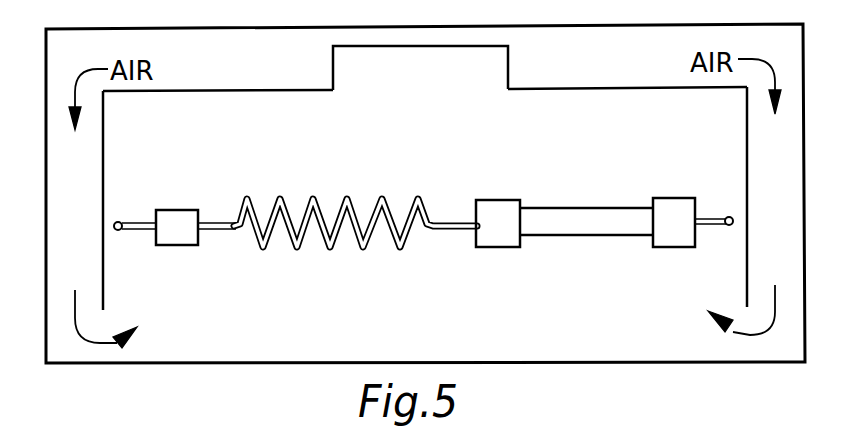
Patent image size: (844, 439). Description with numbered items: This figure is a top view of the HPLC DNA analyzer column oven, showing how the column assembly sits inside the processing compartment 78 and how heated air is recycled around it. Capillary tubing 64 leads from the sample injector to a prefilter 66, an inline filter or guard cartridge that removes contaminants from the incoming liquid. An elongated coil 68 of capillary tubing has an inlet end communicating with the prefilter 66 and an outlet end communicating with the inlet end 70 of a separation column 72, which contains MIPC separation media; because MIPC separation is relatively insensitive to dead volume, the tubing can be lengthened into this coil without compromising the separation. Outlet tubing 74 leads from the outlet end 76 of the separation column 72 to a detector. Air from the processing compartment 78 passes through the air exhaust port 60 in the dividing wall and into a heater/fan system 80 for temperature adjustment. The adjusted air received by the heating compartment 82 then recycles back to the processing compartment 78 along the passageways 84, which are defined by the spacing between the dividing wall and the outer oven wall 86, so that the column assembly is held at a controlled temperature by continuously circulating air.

The air exhaust port 60 is at (432, 92).
The capillary tubing 64 is at (138, 217).
The prefilter 66 is at (178, 209).
The elongated coil of capillary tubing 68 is at (318, 206).
The inlet end of separation column 70 is at (496, 200).
The separation column 72 is at (574, 207).
The outlet tubing 74 is at (712, 215).
The outlet end of separation column 76 is at (670, 197).
The processing compartment 78 is at (598, 146).
The heater/fan system 80 is at (508, 65).
The heating compartment 82 is at (269, 66).
The passageways 84 is at (88, 193).
The outer oven wall 86 is at (46, 135).